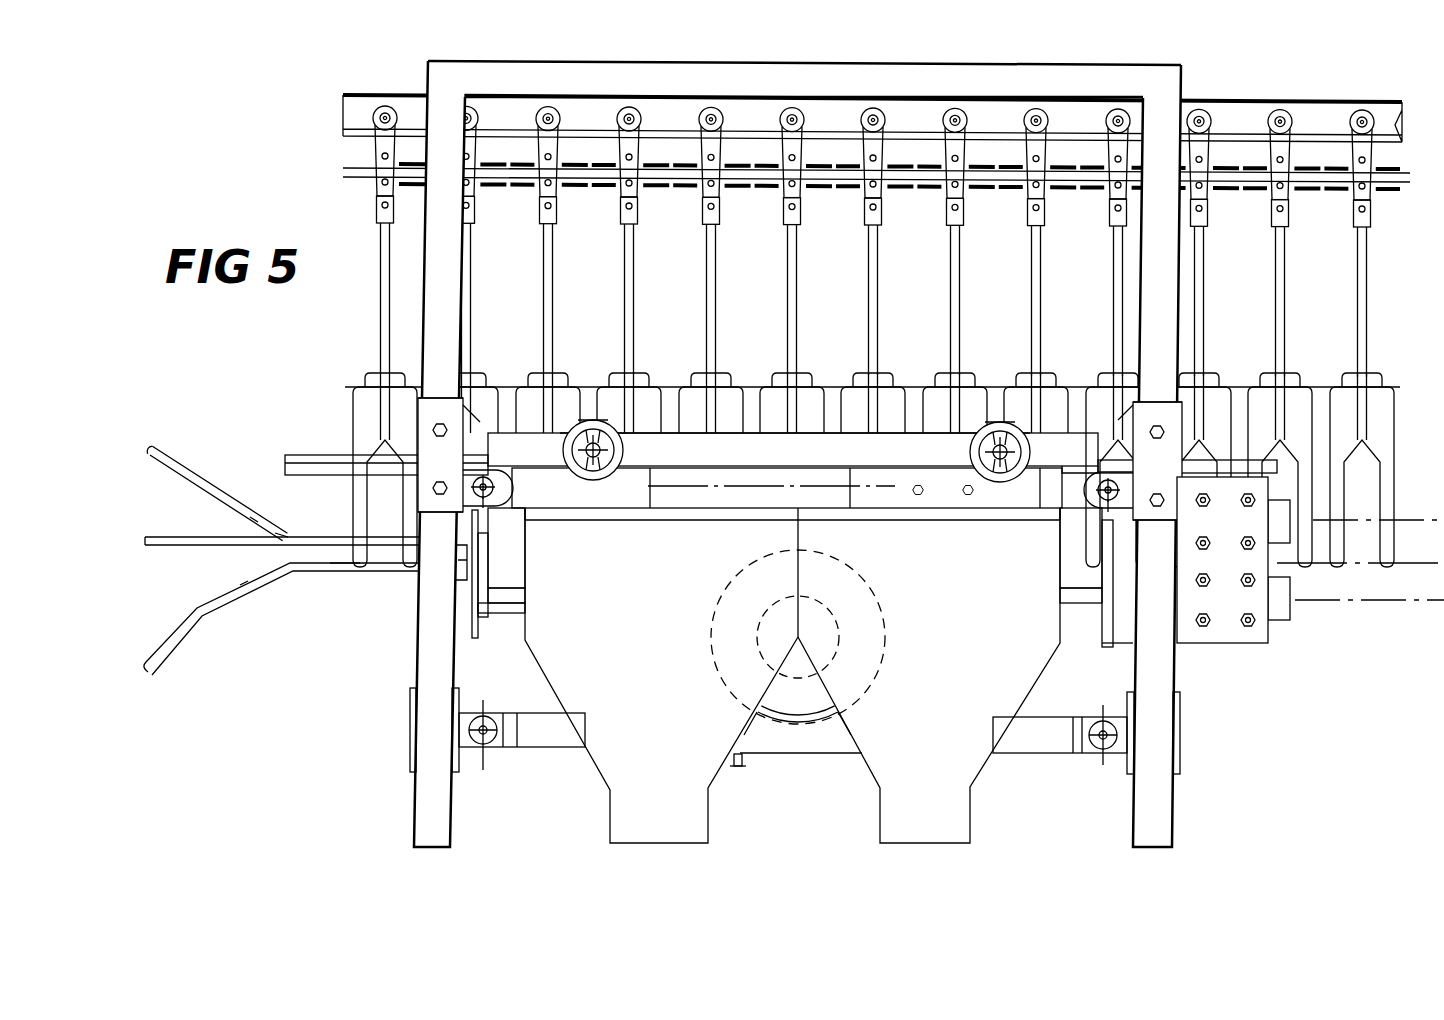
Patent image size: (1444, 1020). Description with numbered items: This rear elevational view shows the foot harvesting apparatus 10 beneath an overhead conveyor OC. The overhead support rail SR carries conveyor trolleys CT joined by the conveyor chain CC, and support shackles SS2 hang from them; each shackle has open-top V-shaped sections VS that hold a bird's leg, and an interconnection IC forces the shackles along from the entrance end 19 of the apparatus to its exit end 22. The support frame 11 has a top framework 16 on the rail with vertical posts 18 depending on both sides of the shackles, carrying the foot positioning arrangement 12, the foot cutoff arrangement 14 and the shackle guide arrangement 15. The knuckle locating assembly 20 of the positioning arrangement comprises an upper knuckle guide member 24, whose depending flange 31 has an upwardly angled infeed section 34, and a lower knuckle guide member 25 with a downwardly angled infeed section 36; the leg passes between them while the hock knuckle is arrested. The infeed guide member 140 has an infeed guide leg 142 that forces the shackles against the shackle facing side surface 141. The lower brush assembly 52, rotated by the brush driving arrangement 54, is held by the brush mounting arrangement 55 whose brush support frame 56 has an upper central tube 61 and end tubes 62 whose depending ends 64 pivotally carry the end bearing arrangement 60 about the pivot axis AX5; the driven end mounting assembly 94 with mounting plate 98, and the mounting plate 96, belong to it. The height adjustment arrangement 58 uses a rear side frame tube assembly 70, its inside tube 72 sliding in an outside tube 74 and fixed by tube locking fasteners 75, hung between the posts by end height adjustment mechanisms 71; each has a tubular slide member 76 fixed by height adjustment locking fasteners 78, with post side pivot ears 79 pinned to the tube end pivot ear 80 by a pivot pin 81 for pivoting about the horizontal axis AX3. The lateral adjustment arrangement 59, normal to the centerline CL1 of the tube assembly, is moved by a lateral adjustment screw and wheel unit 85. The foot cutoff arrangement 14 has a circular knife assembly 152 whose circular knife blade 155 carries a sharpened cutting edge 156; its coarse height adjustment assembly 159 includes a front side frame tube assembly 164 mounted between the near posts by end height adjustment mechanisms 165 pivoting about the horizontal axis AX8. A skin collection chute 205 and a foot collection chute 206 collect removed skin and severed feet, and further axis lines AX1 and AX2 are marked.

The foot harvesting apparatus 10 is at (388, 788).
The support frame 11 is at (1189, 60).
The foot positioning arrangement 12 is at (398, 583).
The foot cutoff arrangement 14 is at (757, 730).
The shackle guide arrangement 15 is at (281, 456).
The top framework 16 is at (850, 67).
The vertical posts 18 is at (450, 284).
The entrance end 19 is at (177, 532).
The knuckle locating assembly 20 is at (298, 600).
The exit end 22 is at (1323, 615).
The upper knuckle guide member 24 is at (157, 440).
The lower knuckle guide member 25 is at (356, 578).
The depending flange 31 is at (200, 498).
The upwardly angled infeed section 34 is at (193, 456).
The downwardly angled infeed section 36 is at (214, 619).
The lower brush assembly 52 is at (535, 612).
The brush driving arrangement 54 is at (1300, 582).
The brush mounting arrangement 55 is at (898, 432).
The brush support frame 56 is at (726, 432).
The height adjustment arrangement 58 is at (633, 521).
The lateral adjustment arrangement 59 is at (592, 410).
The end bearing arrangement 60 is at (486, 642).
The upper central tube 61 is at (854, 460).
The end tubes 62 is at (522, 545).
The depending ends 64 is at (520, 593).
The rear side frame tube assembly 70 is at (697, 528).
The end height adjustment mechanisms 71 is at (479, 388).
The inside tube 72 is at (1045, 519).
The outside tube 74 is at (850, 521).
The tube locking fasteners 75 is at (920, 497).
The tubular slide member 76 is at (452, 400).
The height adjustment locking fasteners 78 is at (1157, 522).
The post side pivot ears 79 is at (460, 514).
The tube end pivot ear 80 is at (512, 466).
The pivot pin 81 is at (476, 485).
The lateral adjustment screw and wheel unit 85 is at (625, 452).
The driven end mounting assembly 94 is at (1278, 648).
The mounting plate 96 is at (470, 617).
The mounting plate 98 is at (1240, 645).
The infeed guide member 140 is at (239, 557).
The shackle facing side surface 141 is at (256, 518).
The infeed guide leg 142 is at (286, 541).
The circular knife assembly 152 is at (790, 757).
The circular knife blade 155 is at (798, 726).
The sharpened cutting edge 156 is at (843, 696).
The coarse height adjustment assembly 159 is at (1109, 709).
The front side frame tube assembly 164 is at (1046, 760).
The end height adjustment mechanisms 165 is at (402, 736).
The skin collection chute 205 is at (704, 820).
The foot collection chute 206 is at (881, 813).
The overhead conveyor OC is at (361, 86).
The overhead support rail SR is at (350, 118).
The conveyor trolleys CT is at (633, 199).
The conveyor chain CC is at (732, 184).
The support shackle SS2 is at (1104, 296).
The interconnection IC is at (683, 389).
The V-shaped sections VS is at (400, 525).
The axis 1 AX1 is at (1335, 523).
The axis 2 AX2 is at (1305, 618).
The horizontal axis AX3 is at (498, 488).
The common pivot axis AX5 is at (1355, 568).
The horizontal axis AX8 is at (483, 746).
The centerline CL1 is at (740, 521).